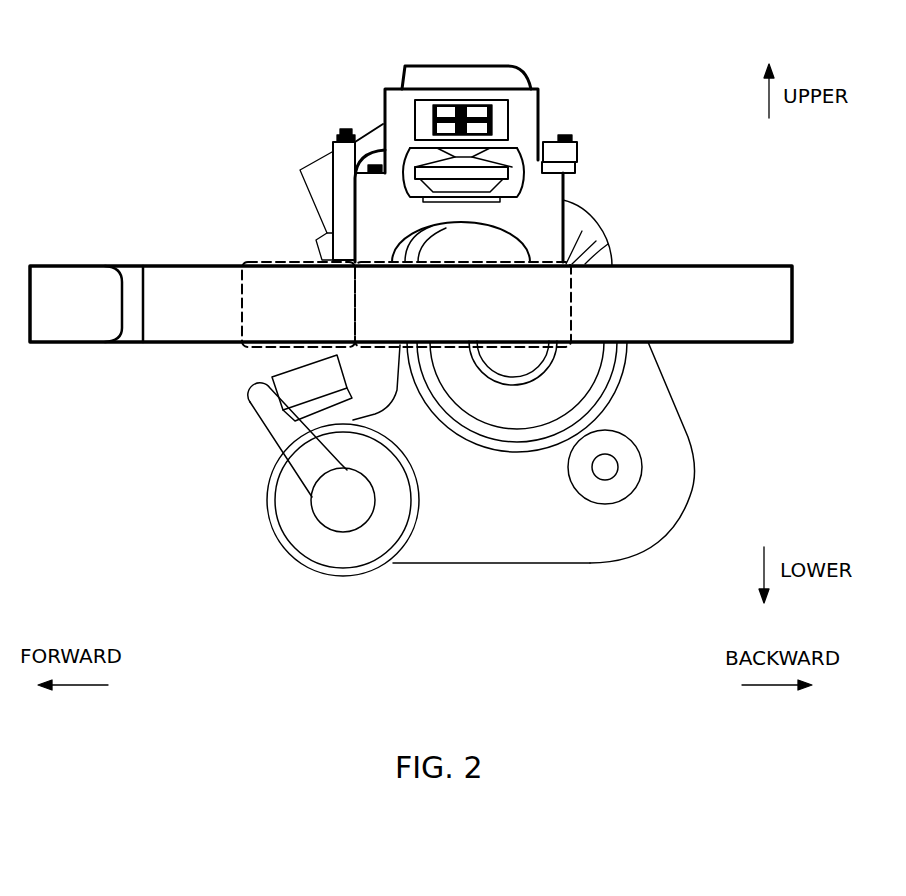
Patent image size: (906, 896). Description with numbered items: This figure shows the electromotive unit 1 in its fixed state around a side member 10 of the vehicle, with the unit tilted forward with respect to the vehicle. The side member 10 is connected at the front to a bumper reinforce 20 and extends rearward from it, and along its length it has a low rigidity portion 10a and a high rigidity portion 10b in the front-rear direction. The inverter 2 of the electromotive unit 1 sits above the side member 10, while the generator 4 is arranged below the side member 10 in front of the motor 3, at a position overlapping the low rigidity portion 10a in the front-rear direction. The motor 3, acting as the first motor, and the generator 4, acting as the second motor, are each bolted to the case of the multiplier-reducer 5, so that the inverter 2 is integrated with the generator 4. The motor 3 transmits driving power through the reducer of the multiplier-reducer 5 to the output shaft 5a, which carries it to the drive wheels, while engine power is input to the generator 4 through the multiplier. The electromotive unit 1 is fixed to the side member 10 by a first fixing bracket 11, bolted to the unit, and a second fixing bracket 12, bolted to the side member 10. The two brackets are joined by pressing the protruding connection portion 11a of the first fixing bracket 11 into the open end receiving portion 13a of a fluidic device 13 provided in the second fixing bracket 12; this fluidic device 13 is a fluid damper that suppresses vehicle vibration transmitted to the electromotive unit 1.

The electromotive unit 1 is at (262, 70).
The inverter 2 is at (296, 152).
The motor 3 is at (644, 368).
The generator 4 is at (292, 570).
The multiplier-reducer 5 is at (490, 564).
The output shaft 5a is at (606, 467).
The side member 10 is at (186, 265).
The low rigidity portion 10a is at (242, 285).
The high rigidity portion 10b is at (588, 279).
The first fixing bracket 11 is at (373, 137).
The protruding connection portion 11a is at (462, 122).
The second fixing bracket 12 is at (540, 192).
The fluidic device 13 is at (500, 150).
The open end receiving portion 13a is at (500, 118).
The bumper reinforce 20 is at (72, 310).